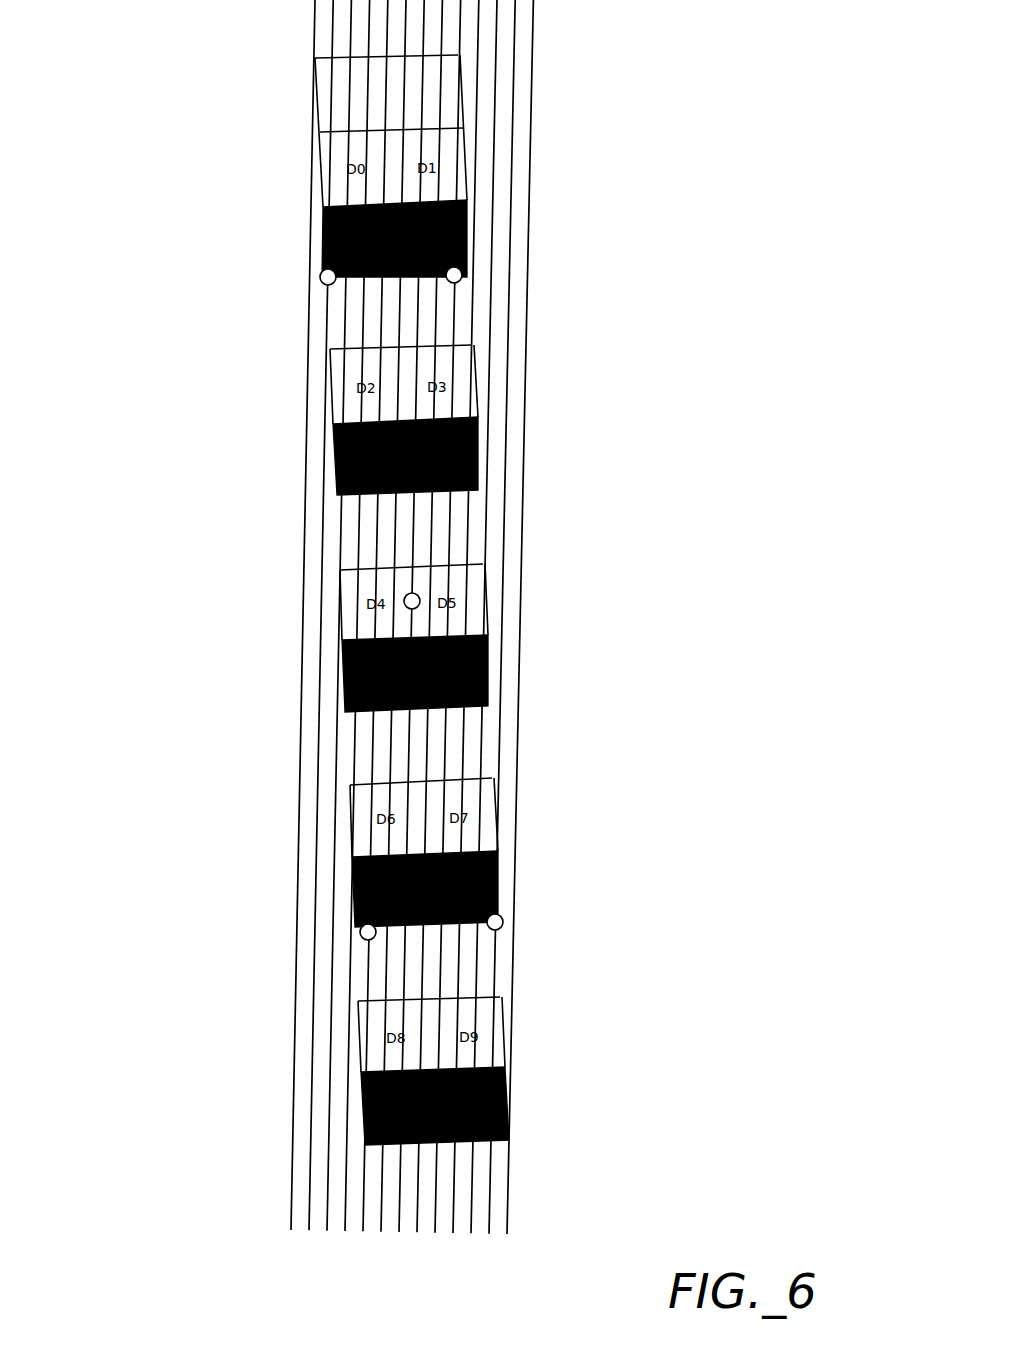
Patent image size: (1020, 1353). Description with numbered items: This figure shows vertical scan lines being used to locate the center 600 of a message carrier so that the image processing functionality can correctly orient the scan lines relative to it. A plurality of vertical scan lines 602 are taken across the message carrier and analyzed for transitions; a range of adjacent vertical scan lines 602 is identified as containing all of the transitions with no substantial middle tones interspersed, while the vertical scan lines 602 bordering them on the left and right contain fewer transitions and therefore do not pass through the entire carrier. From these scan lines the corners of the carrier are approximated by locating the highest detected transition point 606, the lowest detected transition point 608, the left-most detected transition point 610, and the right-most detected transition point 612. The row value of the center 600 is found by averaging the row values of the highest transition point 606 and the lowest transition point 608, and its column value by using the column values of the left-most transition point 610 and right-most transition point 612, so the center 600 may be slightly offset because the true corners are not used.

The center 600 is at (419, 606).
The vertical scan lines 602 is at (327, 1197).
The highest detected transition point 606 is at (461, 280).
The lowest detected transition point 608 is at (361, 934).
The left-most detected transition point 610 is at (502, 927).
The right-most detected transition point 612 is at (321, 275).